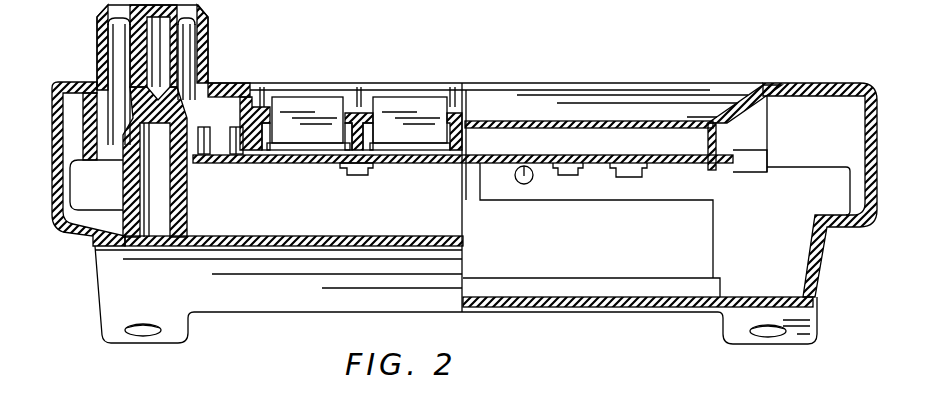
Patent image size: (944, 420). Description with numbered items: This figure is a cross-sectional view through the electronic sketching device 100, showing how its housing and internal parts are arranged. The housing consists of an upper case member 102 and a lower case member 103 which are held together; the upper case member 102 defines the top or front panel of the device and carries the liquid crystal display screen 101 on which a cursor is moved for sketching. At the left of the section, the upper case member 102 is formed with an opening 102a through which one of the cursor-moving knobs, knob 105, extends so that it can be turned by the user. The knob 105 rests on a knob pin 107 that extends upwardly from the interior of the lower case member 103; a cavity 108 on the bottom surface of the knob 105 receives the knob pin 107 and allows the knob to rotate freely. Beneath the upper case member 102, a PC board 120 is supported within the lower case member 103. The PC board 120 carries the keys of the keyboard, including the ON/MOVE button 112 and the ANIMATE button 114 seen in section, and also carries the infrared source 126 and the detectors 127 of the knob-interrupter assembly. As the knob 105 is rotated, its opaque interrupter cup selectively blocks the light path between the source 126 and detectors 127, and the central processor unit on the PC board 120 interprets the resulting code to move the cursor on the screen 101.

The electronic sketching device 100 is at (847, 79).
The liquid crystal display screen 101 is at (707, 111).
The upper case member 102 is at (65, 91).
The openings 102a is at (213, 83).
The lower case member 103 is at (57, 221).
The knob 105 is at (100, 7).
The knob pins 107 is at (158, 106).
The cavities 108 is at (142, 132).
The ON/MOVE button 112 is at (330, 100).
The ANIMATE button 114 is at (417, 107).
The PC board 120 is at (238, 164).
The infrared source 126 is at (238, 140).
The detectors 127 is at (205, 127).